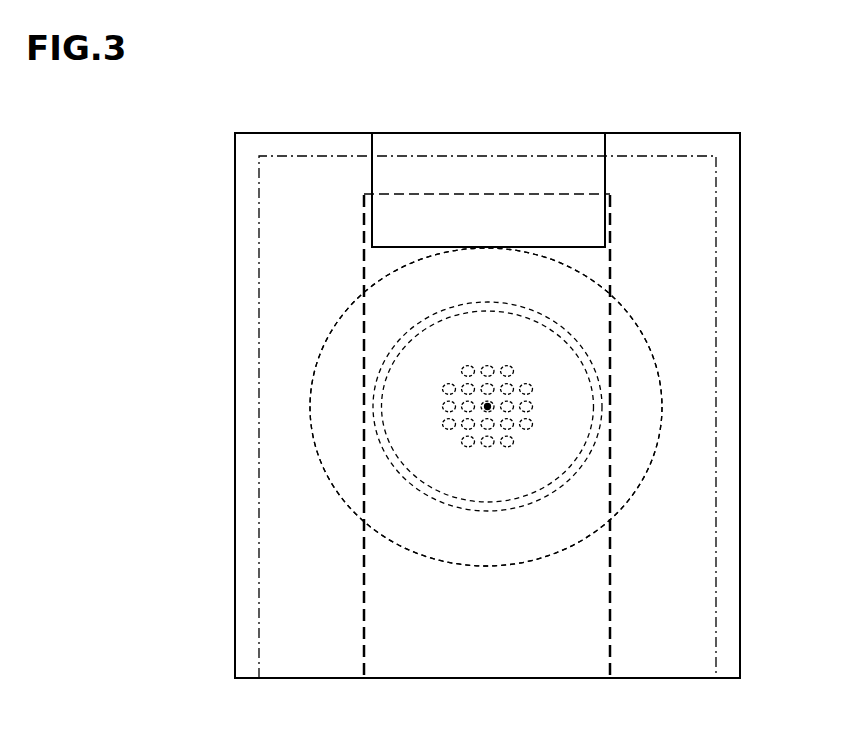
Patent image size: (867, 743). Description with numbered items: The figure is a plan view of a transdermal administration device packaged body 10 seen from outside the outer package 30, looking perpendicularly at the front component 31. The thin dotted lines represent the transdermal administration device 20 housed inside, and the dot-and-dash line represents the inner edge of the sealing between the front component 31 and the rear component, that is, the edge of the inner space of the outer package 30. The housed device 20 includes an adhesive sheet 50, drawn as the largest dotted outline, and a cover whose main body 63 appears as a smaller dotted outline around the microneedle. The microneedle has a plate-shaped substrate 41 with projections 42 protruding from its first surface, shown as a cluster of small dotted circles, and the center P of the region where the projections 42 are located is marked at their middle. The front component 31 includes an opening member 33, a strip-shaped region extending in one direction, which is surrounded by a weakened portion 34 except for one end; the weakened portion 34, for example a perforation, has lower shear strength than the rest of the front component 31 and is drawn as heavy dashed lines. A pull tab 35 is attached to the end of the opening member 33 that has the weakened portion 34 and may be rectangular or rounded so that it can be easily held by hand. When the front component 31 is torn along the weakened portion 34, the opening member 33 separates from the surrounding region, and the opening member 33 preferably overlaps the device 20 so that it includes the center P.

The transdermal administration device packaged body 10 is at (207, 145).
The transdermal administration device 20 is at (539, 566).
The outer package 30 is at (741, 295).
The front component 31 is at (706, 224).
The opening member 33 is at (480, 679).
The weakened portion 34 is at (513, 193).
The pull tab 35 is at (386, 218).
The substrate 41 is at (508, 305).
The projection 42 is at (447, 383).
The adhesive sheet 50 is at (432, 556).
The main body 63 is at (483, 513).
The center P is at (486, 407).